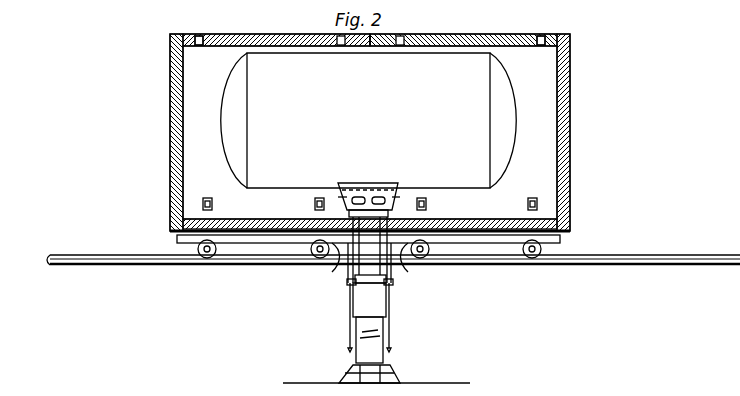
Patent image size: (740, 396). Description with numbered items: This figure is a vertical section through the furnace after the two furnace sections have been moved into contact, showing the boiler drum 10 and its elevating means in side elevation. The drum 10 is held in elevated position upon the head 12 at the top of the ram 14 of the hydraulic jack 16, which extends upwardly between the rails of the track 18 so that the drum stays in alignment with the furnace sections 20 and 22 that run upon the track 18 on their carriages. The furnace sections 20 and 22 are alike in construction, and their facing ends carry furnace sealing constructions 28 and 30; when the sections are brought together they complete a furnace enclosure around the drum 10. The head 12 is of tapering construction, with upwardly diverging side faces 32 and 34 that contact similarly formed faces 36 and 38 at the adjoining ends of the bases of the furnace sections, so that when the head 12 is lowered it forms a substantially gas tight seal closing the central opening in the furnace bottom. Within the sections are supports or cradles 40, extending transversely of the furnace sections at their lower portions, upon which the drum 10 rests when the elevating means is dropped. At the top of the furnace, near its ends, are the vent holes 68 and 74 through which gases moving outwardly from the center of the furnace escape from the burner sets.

The boiler drum 10 is at (369, 120).
The head 12 is at (378, 190).
The ram 14 is at (368, 262).
The hydraulic jack 16 is at (372, 302).
The track 18 is at (100, 263).
The furnace section 20 is at (187, 125).
The furnace section 22 is at (553, 115).
The furnace sealing construction 28 is at (370, 38).
The furnace sealing construction 30 is at (372, 38).
The side face 32 is at (340, 196).
The side face 34 is at (398, 196).
The face 36 is at (356, 240).
The face 38 is at (388, 240).
The supports or cradles 40 is at (207, 198).
The vent hole 68 is at (199, 36).
The vent hole 74 is at (541, 36).